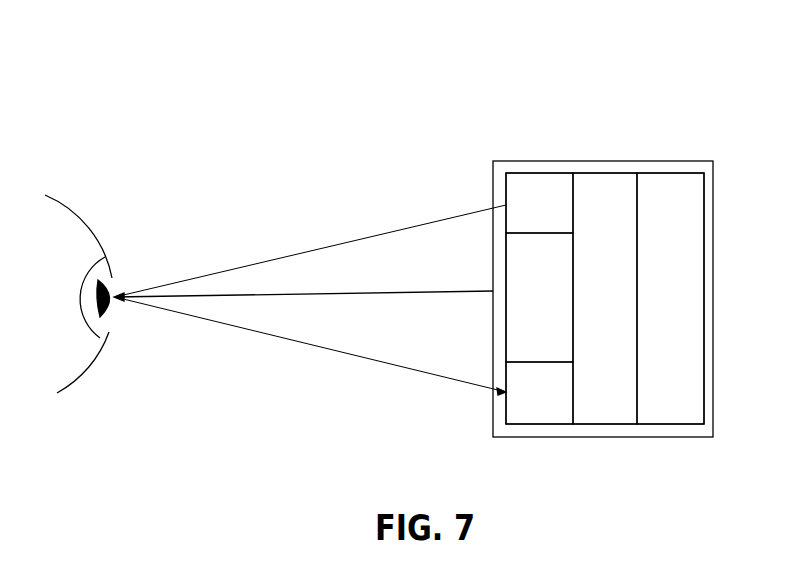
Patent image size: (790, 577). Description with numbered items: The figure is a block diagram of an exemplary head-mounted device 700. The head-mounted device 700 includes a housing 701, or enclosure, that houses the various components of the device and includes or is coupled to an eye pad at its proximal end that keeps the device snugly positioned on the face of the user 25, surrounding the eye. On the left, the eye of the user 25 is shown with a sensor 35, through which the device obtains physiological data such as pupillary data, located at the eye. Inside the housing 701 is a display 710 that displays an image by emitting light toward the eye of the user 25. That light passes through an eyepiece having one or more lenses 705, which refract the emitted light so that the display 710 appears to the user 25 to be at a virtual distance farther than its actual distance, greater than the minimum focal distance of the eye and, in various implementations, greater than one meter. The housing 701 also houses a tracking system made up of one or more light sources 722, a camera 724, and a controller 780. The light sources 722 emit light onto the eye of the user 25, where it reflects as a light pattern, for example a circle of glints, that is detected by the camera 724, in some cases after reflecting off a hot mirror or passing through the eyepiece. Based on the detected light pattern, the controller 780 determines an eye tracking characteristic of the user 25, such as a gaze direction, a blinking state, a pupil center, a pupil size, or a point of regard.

The user 25 is at (75, 213).
The sensor 35 is at (113, 282).
The head-mounted device 700 is at (553, 113).
The housing 701 is at (605, 437).
The lenses 705 is at (562, 288).
The display 710 is at (627, 248).
The light sources 722 is at (562, 215).
The camera 724 is at (560, 406).
The controller 780 is at (694, 248).